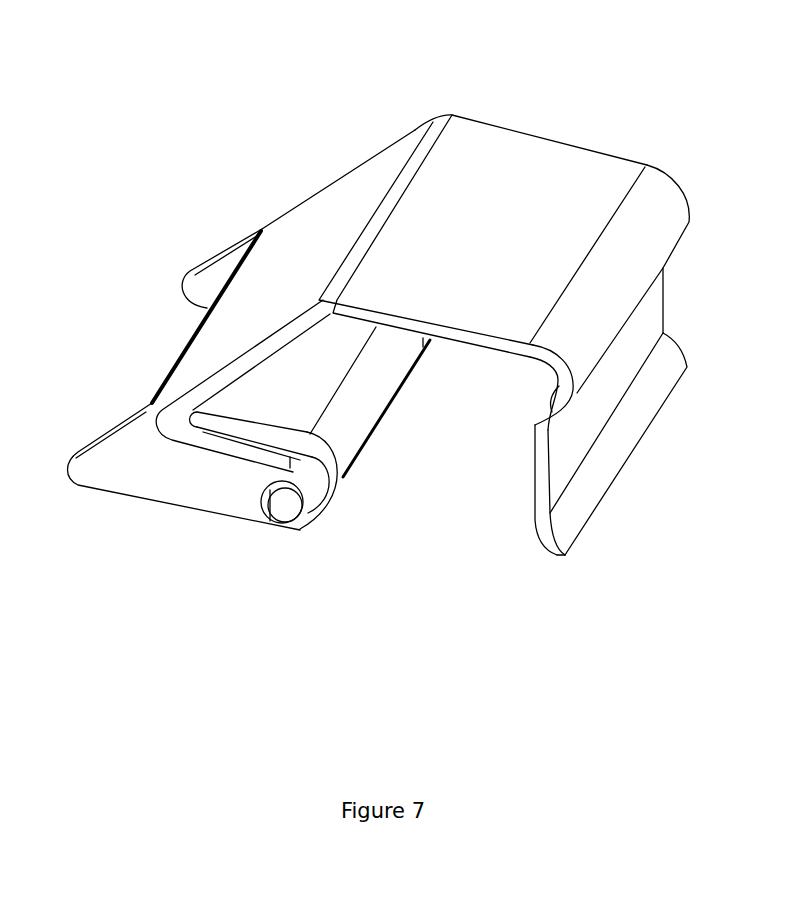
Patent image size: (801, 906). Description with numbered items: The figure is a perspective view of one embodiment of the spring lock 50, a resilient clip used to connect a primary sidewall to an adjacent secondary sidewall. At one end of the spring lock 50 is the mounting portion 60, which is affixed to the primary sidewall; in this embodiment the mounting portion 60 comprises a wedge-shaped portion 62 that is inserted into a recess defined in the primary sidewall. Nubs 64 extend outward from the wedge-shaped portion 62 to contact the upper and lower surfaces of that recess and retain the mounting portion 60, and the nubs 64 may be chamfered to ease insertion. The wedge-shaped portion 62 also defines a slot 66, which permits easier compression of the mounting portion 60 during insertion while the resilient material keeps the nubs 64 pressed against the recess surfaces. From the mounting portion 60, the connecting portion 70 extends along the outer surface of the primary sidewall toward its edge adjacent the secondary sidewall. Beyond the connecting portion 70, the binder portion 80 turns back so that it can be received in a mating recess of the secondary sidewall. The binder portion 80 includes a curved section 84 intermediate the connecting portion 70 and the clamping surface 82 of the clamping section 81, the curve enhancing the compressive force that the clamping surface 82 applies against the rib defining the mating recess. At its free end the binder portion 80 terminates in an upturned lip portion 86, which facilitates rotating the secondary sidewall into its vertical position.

The spring lock 50 is at (423, 349).
The mounting portion 60 is at (135, 503).
The wedge-shaped portion 62 is at (188, 493).
The nubs 64 is at (288, 510).
The slot 66 is at (337, 483).
The connecting portion 70 is at (415, 125).
The binder portion 80 is at (533, 527).
The clamping section 81 is at (667, 307).
The clamping surface 82 is at (523, 465).
The curved section 84 is at (672, 178).
The upturned lip portion 86 is at (556, 558).